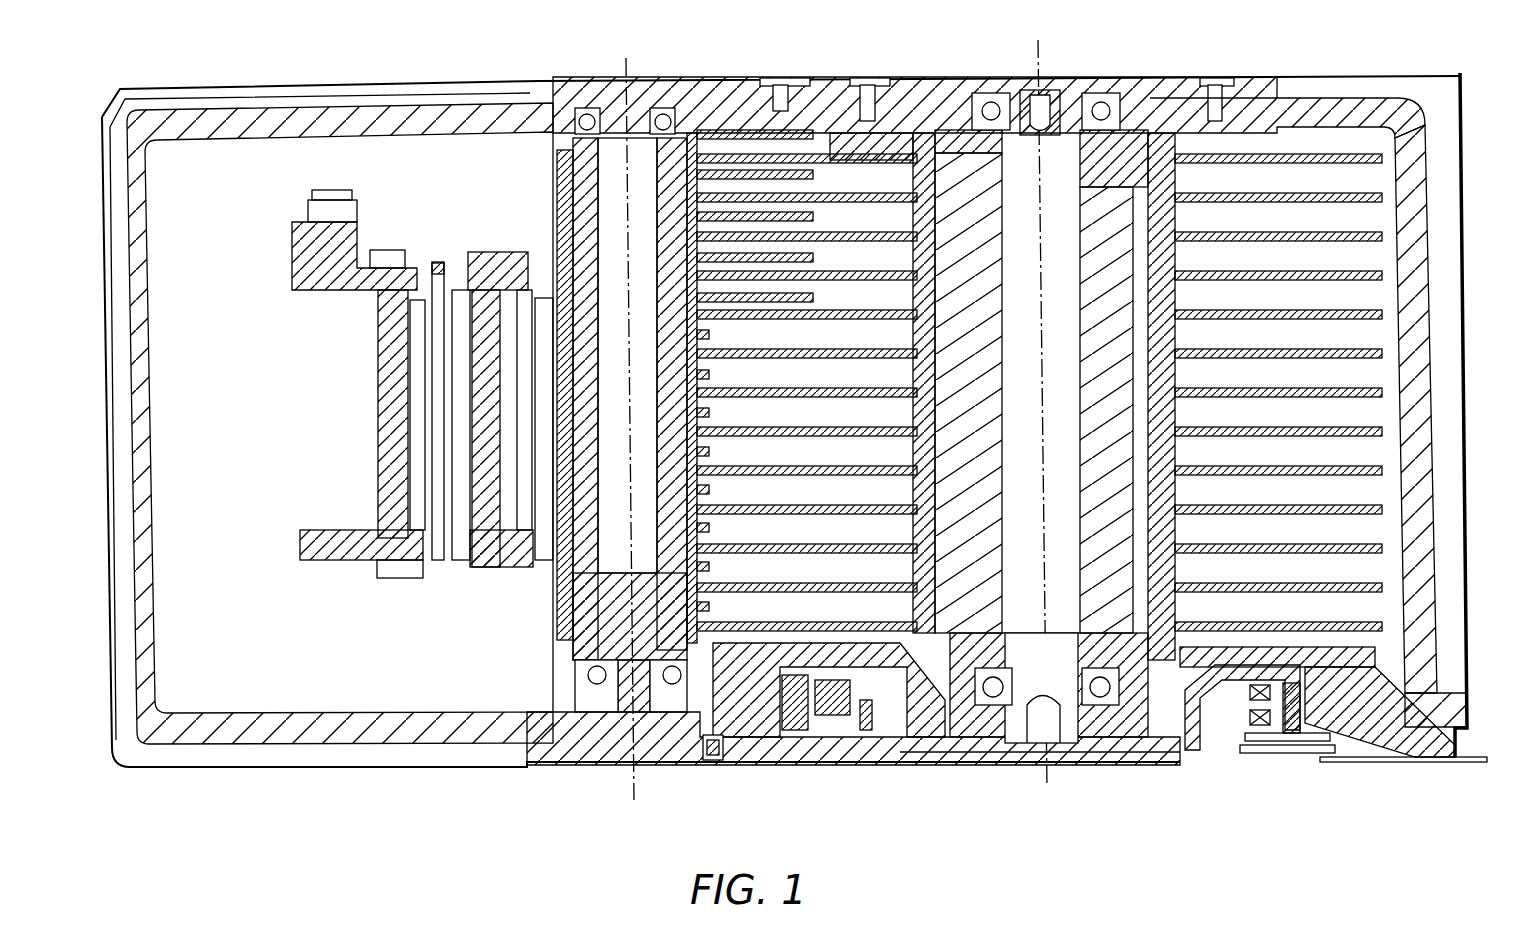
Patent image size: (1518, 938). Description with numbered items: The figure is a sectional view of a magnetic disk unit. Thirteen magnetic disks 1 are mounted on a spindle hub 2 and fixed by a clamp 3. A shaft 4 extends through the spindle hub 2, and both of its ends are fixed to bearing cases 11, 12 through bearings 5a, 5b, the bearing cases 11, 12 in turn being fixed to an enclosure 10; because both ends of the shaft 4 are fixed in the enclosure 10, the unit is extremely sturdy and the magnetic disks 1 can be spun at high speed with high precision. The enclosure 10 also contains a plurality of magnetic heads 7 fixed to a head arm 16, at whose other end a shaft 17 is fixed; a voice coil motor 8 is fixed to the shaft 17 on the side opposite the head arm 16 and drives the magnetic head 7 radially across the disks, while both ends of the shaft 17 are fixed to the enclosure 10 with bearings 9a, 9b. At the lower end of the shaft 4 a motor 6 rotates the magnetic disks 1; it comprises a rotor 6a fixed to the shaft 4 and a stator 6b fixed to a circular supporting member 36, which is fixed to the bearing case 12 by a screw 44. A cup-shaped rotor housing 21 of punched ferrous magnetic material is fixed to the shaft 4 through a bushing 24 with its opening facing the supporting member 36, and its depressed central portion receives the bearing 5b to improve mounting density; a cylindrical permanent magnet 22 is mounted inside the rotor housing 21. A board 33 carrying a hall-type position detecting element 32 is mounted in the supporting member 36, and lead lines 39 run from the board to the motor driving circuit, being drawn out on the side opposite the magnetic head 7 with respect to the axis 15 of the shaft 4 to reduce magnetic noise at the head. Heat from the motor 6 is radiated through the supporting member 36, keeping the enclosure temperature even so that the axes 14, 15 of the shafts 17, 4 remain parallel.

The magnetic disk 1 is at (1350, 150).
The spindle hub 2 is at (1098, 313).
The clamp 3 is at (920, 140).
The shaft 4 is at (1048, 150).
The bearing 5a is at (963, 98).
The bearing 5b is at (980, 735).
The motor 6 is at (912, 764).
The rotor 6a is at (1330, 760).
The stator 6b is at (1222, 740).
The magnetic head 7 is at (825, 148).
The voice coil motor 8 is at (485, 305).
The bearing 9a is at (596, 106).
The bearing 9b is at (578, 680).
The enclosure 10 is at (1430, 383).
The bearing case 11 is at (1168, 98).
The bearing case 12 is at (1415, 757).
The axis 14 is at (634, 790).
The axis 15 is at (1047, 787).
The head arm 16 is at (715, 130).
The shaft 17 is at (547, 86).
The rotor housing 21 is at (1140, 745).
The magnet 22 is at (1298, 690).
The bushing 24 is at (1022, 745).
The position detecting element 32 is at (1262, 746).
The board 33 is at (1300, 742).
The supporting member 36 is at (852, 764).
The lead lines 39 is at (1485, 763).
The screw 44 is at (715, 762).